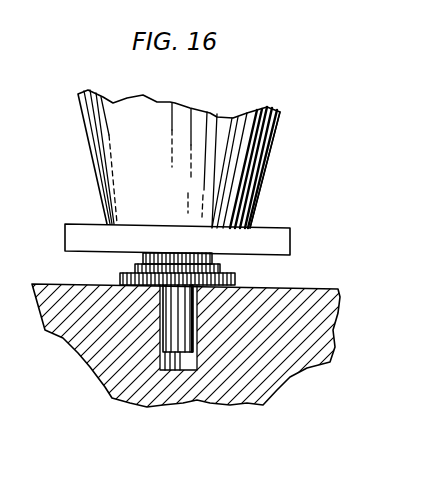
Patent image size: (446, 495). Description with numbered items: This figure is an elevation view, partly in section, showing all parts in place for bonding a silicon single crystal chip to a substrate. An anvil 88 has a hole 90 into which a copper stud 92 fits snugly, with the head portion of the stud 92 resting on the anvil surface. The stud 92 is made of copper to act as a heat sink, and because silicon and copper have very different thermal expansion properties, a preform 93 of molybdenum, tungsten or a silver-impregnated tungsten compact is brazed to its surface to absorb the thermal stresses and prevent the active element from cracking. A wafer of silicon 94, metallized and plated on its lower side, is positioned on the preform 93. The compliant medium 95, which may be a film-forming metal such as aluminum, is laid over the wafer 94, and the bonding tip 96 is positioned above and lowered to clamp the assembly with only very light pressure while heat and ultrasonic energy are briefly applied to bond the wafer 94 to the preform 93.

The anvil 88 is at (340, 313).
The hole 90 is at (193, 370).
The copper stud 92 is at (194, 307).
The preform 93 is at (133, 270).
The wafer of silicon 94 is at (208, 257).
The compliant medium 95 is at (270, 233).
The bonding tip 96 is at (272, 141).